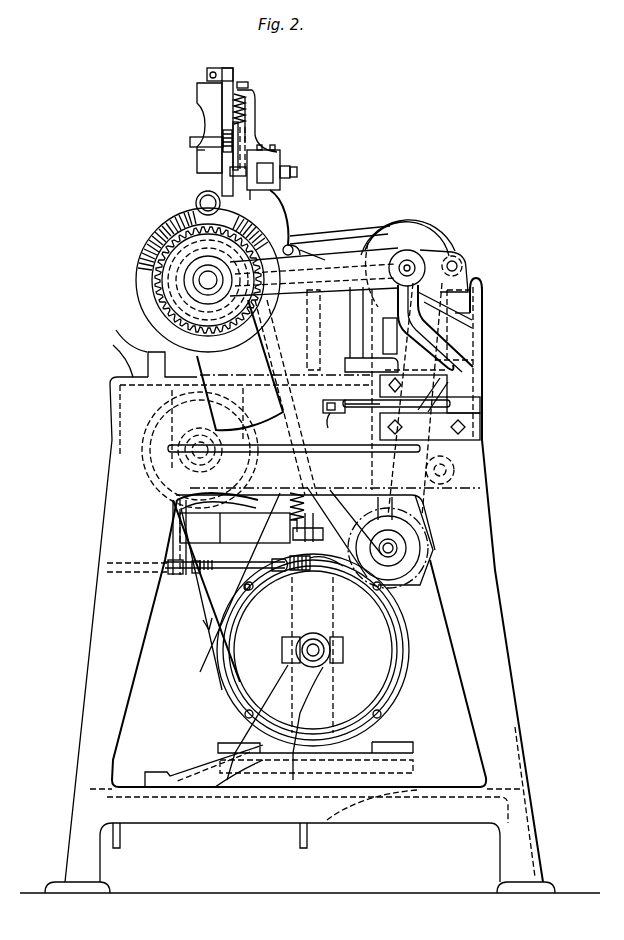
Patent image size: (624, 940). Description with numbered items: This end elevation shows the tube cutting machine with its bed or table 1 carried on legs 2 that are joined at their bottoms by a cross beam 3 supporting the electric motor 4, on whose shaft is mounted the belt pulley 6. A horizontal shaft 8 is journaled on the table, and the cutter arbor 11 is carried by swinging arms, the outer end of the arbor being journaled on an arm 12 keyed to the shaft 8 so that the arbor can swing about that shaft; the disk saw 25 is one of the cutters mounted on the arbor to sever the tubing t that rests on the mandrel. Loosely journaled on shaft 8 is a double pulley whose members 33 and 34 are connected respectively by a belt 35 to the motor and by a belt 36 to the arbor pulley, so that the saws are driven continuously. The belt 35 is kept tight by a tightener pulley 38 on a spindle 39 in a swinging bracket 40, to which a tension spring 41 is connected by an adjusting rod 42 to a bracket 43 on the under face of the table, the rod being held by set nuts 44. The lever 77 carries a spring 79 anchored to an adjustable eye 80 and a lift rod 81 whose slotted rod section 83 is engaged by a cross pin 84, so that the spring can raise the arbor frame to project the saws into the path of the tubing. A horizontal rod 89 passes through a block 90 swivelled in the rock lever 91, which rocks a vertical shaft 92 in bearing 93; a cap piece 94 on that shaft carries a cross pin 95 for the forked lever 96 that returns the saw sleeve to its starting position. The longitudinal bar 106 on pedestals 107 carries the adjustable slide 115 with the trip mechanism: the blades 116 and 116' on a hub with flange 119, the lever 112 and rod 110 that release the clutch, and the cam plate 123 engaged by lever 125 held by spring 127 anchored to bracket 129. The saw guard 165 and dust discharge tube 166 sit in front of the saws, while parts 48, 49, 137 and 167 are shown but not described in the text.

The bed or table 1 is at (147, 368).
The legs 2 is at (92, 650).
The cross beam 3 is at (295, 835).
The electric motor 4 is at (220, 688).
The belt pulley 6 is at (236, 632).
The horizontal shaft 8 is at (420, 262).
The arbor 11 is at (200, 281).
The arm 12 is at (332, 228).
The saw 25 is at (186, 230).
The pulley member 33 is at (345, 330).
The pulley member 34 is at (410, 266).
The belt 35 is at (268, 529).
The belt 36 is at (368, 224).
The belt tightener pulley 38 is at (418, 556).
The spindle 39 is at (395, 580).
The swinging bracket 40 is at (413, 517).
The tension spring 41 is at (318, 572).
The adjusting rod 42 is at (240, 570).
The bracket 43 is at (180, 538).
The set nuts 44 is at (175, 575).
The leaf spring 48 is at (175, 505).
The rod 49 is at (205, 634).
The lever 77 is at (322, 506).
The spring 79 is at (290, 494).
The adjustable eye 80 is at (296, 412).
The lift rod 81 is at (352, 352).
The slotted rod section 83 is at (312, 246).
The cross pin 84 is at (314, 272).
The horizontally extending rod 89 is at (329, 423).
The block 90 is at (361, 421).
The rock lever 91 is at (411, 405).
The vertical shaft 92 is at (474, 332).
The vertical bearing 93 is at (483, 343).
The cap piece 94 is at (484, 288).
The cross pin 95 is at (462, 258).
The lever 96 is at (398, 250).
The bar 106 is at (272, 165).
The pedestals 107 is at (303, 200).
The rod 110 is at (220, 67).
The lever 112 is at (234, 88).
The adjustable slide 115 is at (297, 166).
The trip plate 116 is at (178, 160).
The blade 116' is at (185, 128).
The flange 119 is at (190, 141).
The plate 123 is at (240, 135).
The lever 125 is at (232, 172).
The spring 127 is at (252, 104).
The bracket 129 is at (252, 118).
The pivot 137 is at (292, 234).
The saw guard 165 is at (145, 238).
The dust discharge tube 166 is at (215, 363).
The support 167 is at (118, 333).
The tubing t is at (196, 202).